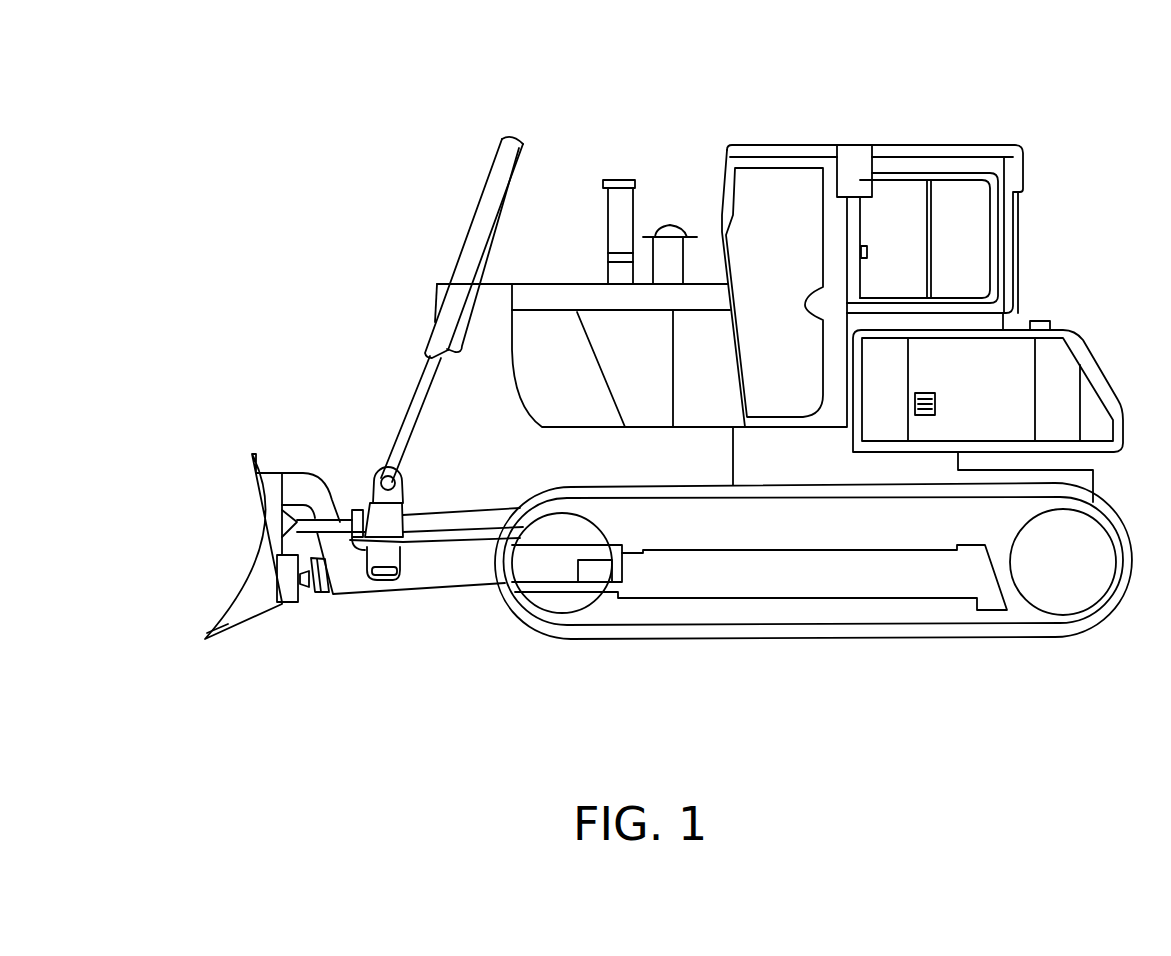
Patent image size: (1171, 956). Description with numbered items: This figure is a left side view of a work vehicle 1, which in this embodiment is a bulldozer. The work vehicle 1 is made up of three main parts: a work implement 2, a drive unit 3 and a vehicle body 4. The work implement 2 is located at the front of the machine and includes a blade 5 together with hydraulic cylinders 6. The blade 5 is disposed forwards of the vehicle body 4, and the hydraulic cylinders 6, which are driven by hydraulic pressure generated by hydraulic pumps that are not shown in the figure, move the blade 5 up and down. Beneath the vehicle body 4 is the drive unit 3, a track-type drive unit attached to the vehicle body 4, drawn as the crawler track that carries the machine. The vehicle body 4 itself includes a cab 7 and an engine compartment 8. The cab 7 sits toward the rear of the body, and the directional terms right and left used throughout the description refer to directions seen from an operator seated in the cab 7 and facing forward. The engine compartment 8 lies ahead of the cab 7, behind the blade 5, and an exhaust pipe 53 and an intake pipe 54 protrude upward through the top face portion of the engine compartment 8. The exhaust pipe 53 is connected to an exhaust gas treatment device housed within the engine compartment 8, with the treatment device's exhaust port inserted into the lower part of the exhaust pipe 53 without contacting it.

The work vehicle 1 is at (395, 129).
The work implement 2 is at (323, 450).
The drive unit 3 is at (793, 625).
The vehicle body 4 is at (862, 125).
The blade 5 is at (266, 527).
The hydraulic cylinders 6 is at (418, 397).
The cab 7 is at (758, 145).
The engine compartment 8 is at (547, 296).
The exhaust pipe 53 is at (622, 180).
The intake pipe 54 is at (670, 224).